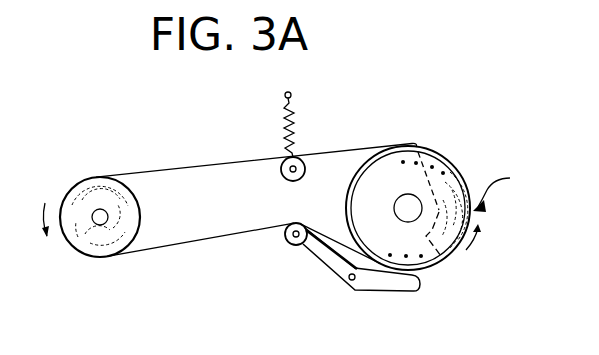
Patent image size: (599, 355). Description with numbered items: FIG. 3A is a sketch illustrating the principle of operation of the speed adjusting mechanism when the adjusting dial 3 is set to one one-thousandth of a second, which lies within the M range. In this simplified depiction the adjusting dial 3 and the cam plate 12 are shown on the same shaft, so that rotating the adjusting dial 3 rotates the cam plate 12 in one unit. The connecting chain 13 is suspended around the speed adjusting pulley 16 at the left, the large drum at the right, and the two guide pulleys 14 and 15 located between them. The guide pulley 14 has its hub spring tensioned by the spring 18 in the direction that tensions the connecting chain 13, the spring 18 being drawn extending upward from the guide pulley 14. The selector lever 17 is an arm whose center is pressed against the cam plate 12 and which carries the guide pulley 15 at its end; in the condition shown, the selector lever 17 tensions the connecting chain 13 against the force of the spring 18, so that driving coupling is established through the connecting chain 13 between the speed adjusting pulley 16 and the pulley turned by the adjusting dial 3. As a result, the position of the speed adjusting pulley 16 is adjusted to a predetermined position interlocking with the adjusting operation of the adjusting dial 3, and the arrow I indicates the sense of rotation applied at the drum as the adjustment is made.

The adjusting dial 3 is at (453, 171).
The cam plate 12 is at (402, 158).
The connecting chain 13 is at (163, 247).
The guide pulley 14 is at (282, 178).
The guide pulley 15 is at (295, 246).
The speed adjusting pulley 16 is at (92, 186).
The selector lever 17 is at (381, 283).
The spring 18 is at (283, 128).
The rotation direction arrow I is at (494, 206).